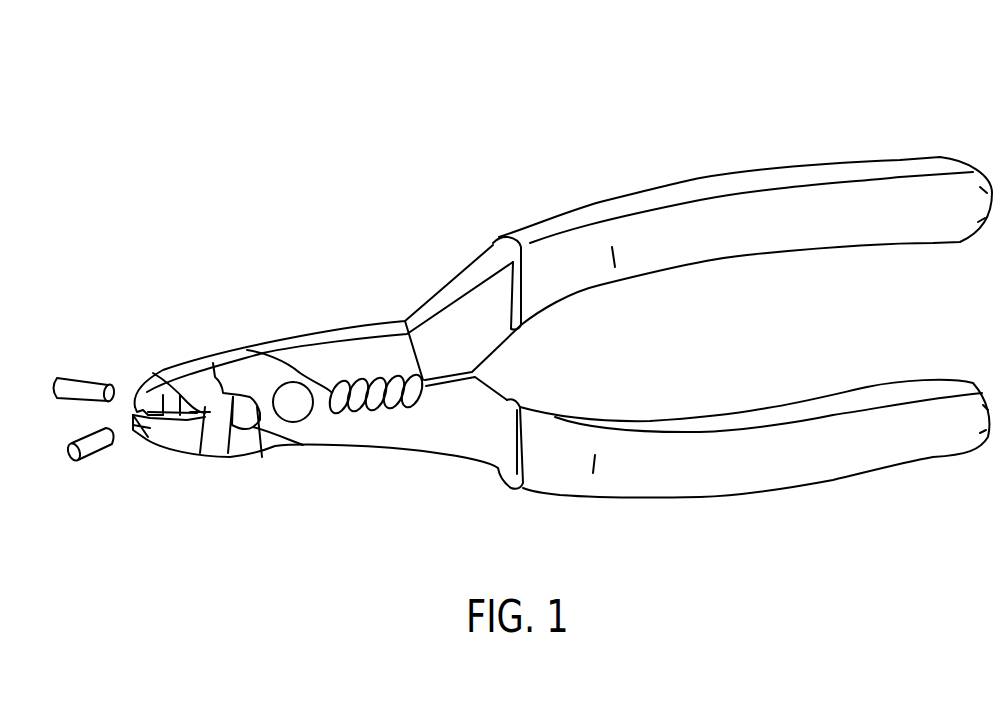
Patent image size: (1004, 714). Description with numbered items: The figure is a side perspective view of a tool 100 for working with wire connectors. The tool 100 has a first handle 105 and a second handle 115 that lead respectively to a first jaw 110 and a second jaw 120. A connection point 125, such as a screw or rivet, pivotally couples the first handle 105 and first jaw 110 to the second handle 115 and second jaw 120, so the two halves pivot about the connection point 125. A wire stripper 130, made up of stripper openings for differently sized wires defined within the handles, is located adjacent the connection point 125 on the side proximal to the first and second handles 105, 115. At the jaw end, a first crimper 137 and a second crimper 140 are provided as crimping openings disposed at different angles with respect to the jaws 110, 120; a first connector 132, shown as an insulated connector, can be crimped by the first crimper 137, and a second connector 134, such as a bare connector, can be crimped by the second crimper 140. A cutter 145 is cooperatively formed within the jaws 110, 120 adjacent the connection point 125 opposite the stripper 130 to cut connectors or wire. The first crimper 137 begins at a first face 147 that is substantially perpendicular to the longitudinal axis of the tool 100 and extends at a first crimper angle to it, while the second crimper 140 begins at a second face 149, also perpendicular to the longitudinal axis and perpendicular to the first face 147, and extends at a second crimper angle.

The tool 100 is at (916, 108).
The first handle 105 is at (927, 233).
The first jaw 110 is at (167, 433).
The second handle 115 is at (838, 470).
The second jaw 120 is at (145, 388).
The connection point 125 is at (286, 389).
The wire stripper 130 is at (372, 410).
The first connector 132 is at (87, 453).
The second connector 134 is at (68, 380).
The first crimper 137 is at (138, 432).
The second crimper 140 is at (187, 393).
The cutter 145 is at (250, 427).
The first face 147 is at (130, 403).
The second face 149 is at (200, 453).